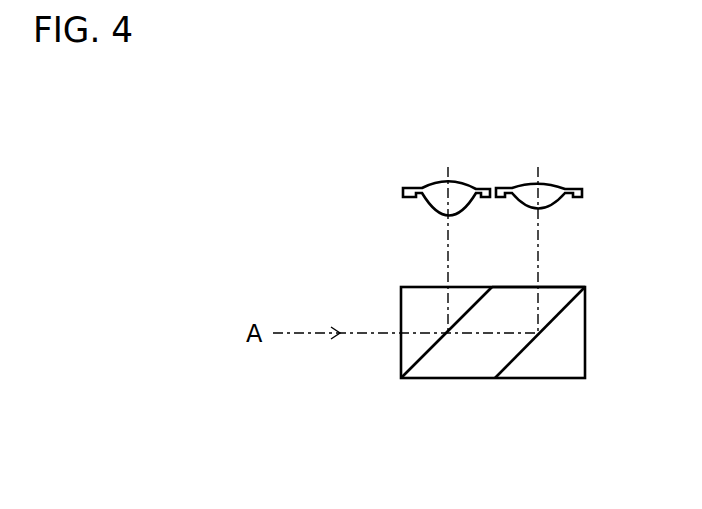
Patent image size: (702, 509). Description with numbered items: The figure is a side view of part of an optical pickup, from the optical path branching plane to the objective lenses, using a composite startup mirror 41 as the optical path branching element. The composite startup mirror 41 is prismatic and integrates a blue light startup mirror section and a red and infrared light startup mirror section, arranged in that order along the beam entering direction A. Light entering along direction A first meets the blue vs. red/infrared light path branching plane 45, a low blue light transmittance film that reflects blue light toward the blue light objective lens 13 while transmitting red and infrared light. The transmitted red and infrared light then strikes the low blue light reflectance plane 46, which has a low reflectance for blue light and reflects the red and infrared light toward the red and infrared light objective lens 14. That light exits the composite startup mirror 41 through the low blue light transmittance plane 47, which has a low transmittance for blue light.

The blue light objective lens 13 is at (430, 191).
The red and infrared light objective lens 14 is at (528, 192).
The composite startup mirror 41 is at (432, 367).
The blue vs. red/infrared light path branching plane 45 is at (404, 375).
The low blue light reflectance plane 46 is at (502, 363).
The low blue light transmittance plane 47 is at (563, 285).